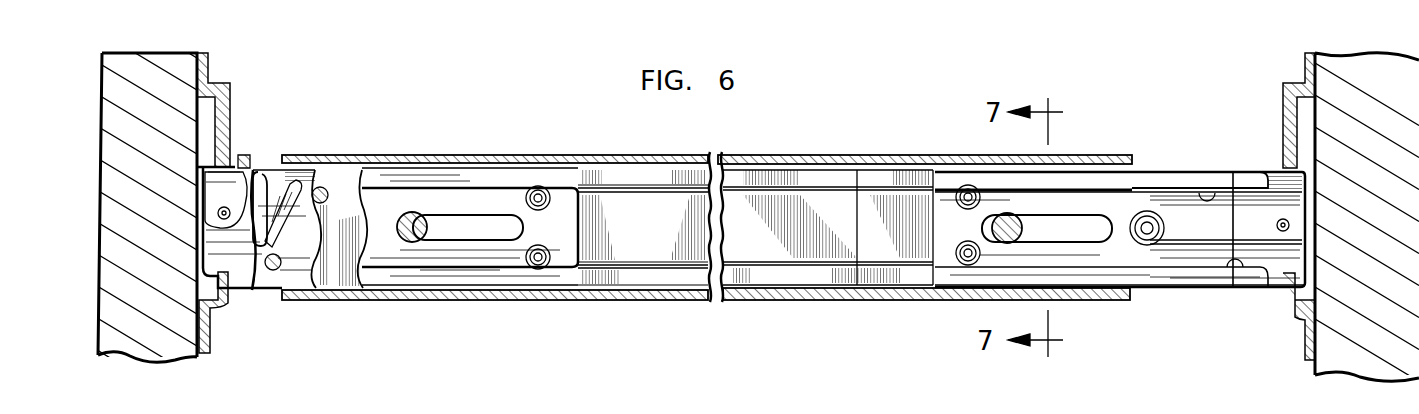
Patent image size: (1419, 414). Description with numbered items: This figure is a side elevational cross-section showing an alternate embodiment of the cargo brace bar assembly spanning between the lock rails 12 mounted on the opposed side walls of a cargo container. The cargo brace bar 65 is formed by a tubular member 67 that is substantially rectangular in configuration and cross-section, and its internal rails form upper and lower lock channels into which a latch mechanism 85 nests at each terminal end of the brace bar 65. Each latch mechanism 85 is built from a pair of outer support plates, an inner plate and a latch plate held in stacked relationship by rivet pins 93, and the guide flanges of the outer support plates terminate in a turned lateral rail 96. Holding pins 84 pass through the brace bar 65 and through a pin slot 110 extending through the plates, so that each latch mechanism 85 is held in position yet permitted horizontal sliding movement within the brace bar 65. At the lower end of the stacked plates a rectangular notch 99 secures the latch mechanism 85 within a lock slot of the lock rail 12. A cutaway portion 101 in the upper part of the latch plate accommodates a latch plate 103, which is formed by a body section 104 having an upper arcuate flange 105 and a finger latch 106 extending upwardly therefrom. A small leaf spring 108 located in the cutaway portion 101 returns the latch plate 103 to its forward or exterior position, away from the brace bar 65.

The lock rail 12 is at (1300, 70).
The cargo brace bar 65 is at (935, 152).
The tubular member 67 is at (805, 155).
The holding pin 84 is at (420, 217).
The latch mechanism 85 is at (395, 200).
The rivet pin 93 is at (968, 262).
The lateral rail 96 is at (558, 178).
The rectangular notch 99 is at (222, 288).
The cutaway portion 101 is at (268, 268).
The latch plate 103 is at (241, 147).
The body section 104 is at (218, 193).
The upper arcuate flange 105 is at (222, 166).
The finger latch 106 is at (248, 158).
The leaf spring 108 is at (267, 190).
The pin slot 110 is at (512, 215).